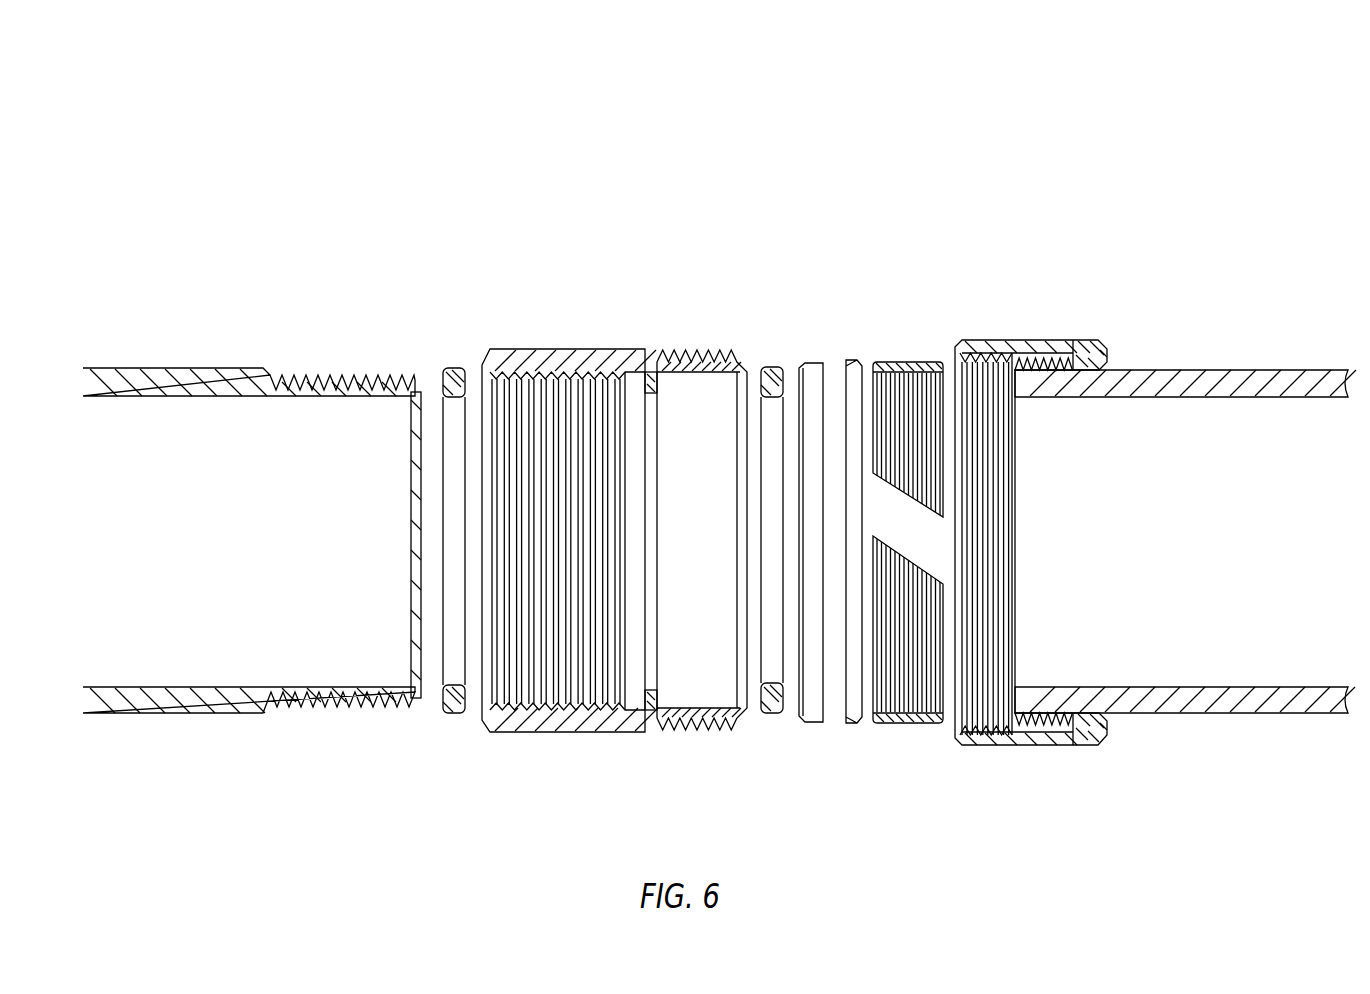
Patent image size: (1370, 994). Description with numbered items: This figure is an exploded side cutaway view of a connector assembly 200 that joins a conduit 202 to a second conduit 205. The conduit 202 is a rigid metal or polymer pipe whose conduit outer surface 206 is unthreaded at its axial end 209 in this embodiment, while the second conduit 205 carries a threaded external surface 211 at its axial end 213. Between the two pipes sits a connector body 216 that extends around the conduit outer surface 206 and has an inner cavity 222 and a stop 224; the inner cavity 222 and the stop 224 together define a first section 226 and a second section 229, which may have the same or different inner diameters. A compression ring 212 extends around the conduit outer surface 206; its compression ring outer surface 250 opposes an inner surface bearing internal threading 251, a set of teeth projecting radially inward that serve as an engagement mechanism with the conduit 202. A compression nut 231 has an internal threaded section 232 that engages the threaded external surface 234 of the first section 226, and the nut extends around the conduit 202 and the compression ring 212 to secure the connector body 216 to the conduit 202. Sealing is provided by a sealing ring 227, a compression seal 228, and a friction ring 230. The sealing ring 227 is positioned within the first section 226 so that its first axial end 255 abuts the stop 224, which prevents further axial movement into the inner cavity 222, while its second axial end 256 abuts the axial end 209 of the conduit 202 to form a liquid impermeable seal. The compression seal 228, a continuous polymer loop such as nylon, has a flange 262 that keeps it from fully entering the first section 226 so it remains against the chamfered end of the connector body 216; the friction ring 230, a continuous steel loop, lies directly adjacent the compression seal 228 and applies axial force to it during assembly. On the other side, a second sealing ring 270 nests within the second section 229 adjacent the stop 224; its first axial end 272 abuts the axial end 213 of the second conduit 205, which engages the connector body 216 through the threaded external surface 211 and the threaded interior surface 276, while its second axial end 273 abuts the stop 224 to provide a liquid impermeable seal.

The connector assembly 200 is at (719, 427).
The conduit 202 is at (1185, 497).
The second conduit 205 is at (265, 534).
The conduit outer surface 206 is at (1197, 370).
The axial end of conduit 209 is at (1006, 725).
The threaded external surface 211 is at (290, 372).
The compression ring 212 is at (919, 350).
The axial end of second conduit 213 is at (425, 698).
The connector body 216 is at (717, 510).
The inner cavity 222 is at (716, 684).
The stop 224 is at (677, 722).
The first section 226 is at (697, 484).
The sealing ring 227 is at (761, 476).
The compression seal 228 is at (812, 738).
The second section 229 is at (570, 548).
The friction ring 230 is at (855, 450).
The compression nut 231 is at (1031, 537).
The internal threaded section 232 is at (1033, 730).
The threaded external surface 234 is at (718, 732).
The compression ring outer surface 250 is at (918, 520).
The internal threading 251 is at (910, 697).
The first axial end of sealing ring 255 is at (755, 346).
The second axial end of sealing ring 256 is at (852, 530).
The flange 262 is at (833, 495).
The second sealing ring 270 is at (443, 490).
The first axial end of second sealing ring 272 is at (440, 372).
The second axial end of second sealing ring 273 is at (474, 370).
The threaded interior surface 276 is at (557, 712).